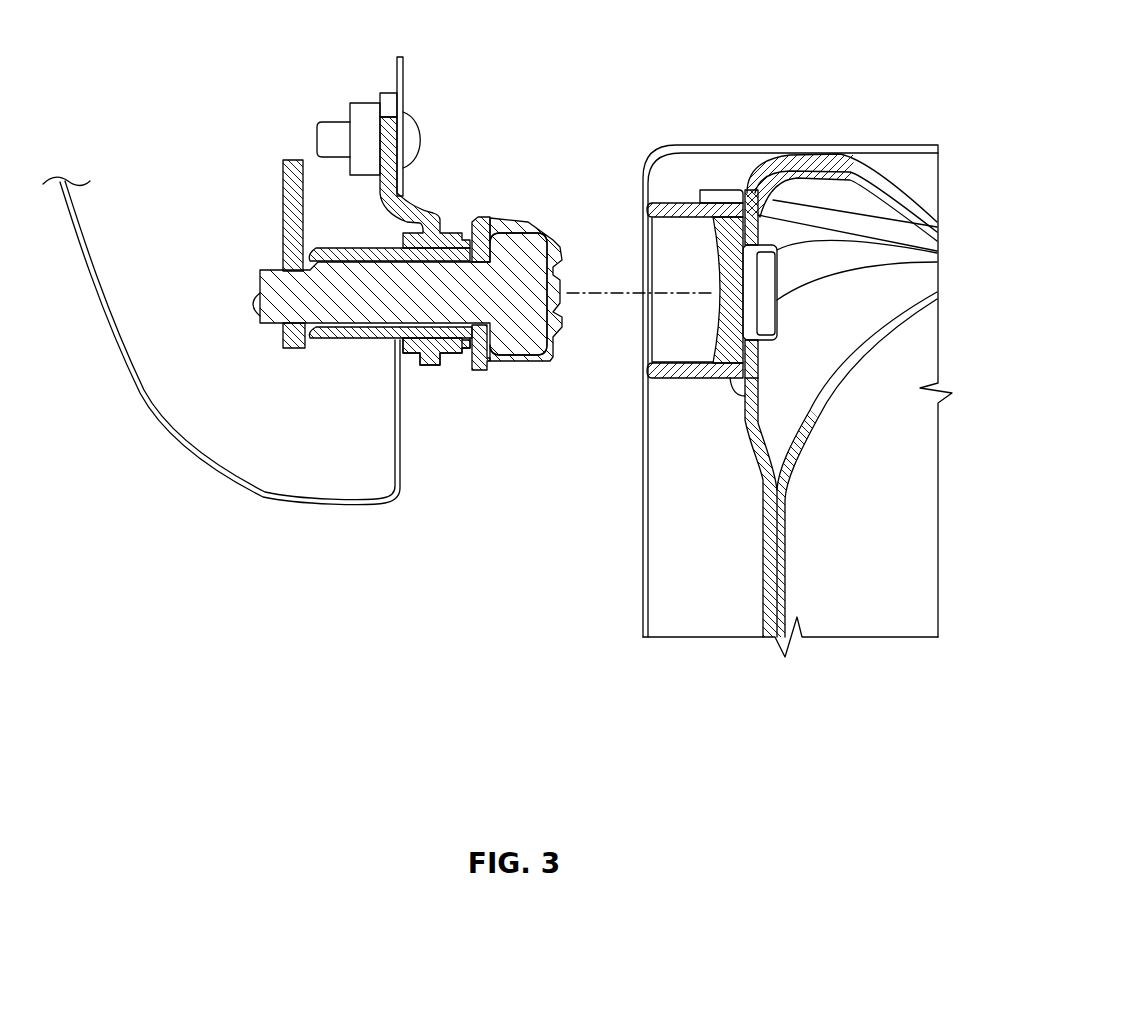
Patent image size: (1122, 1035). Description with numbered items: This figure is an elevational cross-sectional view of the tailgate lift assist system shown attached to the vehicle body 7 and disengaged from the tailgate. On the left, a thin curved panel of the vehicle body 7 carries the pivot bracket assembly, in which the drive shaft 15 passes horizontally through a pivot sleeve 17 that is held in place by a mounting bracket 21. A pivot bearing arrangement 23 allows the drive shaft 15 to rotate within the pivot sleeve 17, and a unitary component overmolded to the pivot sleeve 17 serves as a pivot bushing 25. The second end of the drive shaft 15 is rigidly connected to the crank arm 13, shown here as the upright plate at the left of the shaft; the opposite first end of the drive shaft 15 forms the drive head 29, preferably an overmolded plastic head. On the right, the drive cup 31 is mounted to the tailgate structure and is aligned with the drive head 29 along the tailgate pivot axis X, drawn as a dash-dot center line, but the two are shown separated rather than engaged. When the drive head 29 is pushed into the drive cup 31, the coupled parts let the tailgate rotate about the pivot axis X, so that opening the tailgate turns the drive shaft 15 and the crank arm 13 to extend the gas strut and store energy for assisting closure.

The vehicle body 7 is at (245, 480).
The crank arm 13 is at (283, 207).
The drive shaft 15 is at (265, 305).
The pivot sleeve 17 is at (455, 240).
The mounting bracket 21 is at (403, 200).
The pivot bearing arrangement 23 is at (345, 233).
The pivot bushing 25 is at (368, 332).
The drive head 29 is at (510, 227).
The drive cup 31 is at (677, 222).
The tailgate pivot axis X is at (605, 290).